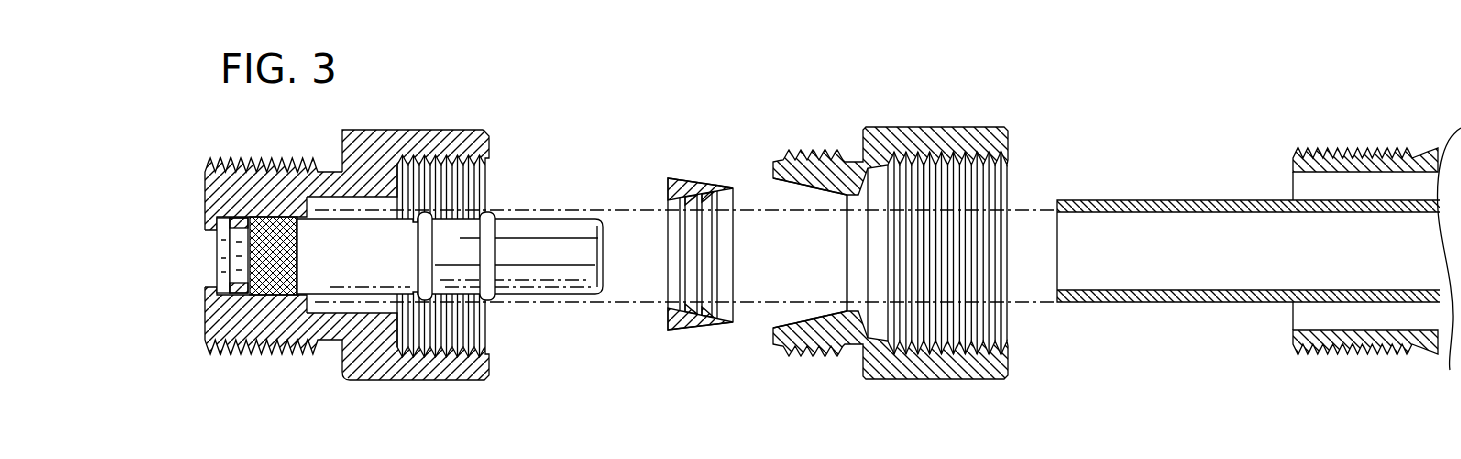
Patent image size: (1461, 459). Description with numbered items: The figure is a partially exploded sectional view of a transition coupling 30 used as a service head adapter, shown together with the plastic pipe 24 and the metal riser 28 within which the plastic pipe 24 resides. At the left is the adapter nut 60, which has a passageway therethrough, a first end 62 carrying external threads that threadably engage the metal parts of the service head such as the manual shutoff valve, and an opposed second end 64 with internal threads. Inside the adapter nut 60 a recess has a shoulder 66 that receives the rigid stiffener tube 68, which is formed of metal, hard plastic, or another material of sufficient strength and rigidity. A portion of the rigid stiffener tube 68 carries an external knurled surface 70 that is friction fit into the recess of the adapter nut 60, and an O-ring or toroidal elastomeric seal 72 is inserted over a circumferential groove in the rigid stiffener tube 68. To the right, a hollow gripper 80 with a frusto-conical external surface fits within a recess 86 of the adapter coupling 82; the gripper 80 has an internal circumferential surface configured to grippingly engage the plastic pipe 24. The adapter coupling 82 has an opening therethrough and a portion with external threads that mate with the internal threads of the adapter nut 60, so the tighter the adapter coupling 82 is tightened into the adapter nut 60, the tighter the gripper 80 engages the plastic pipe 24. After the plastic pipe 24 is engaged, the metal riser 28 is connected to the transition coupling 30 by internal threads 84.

The plastic pipe 24 is at (1170, 197).
The metal riser 28 is at (1350, 150).
The transition coupling 30 is at (445, 104).
The adapter nut 60 is at (347, 130).
The first end 62 is at (205, 180).
The second end 64 is at (476, 187).
The shoulder 66 is at (250, 303).
The rigid stiffener tube 68 is at (363, 267).
The external knurled surface 70 is at (283, 283).
The O-ring or toroidal elastomeric seal 72 is at (238, 238).
The hollow gripper 80 is at (687, 180).
The adapter coupling 82 is at (893, 133).
The internal threads 84 is at (997, 188).
The recess 86 is at (820, 188).